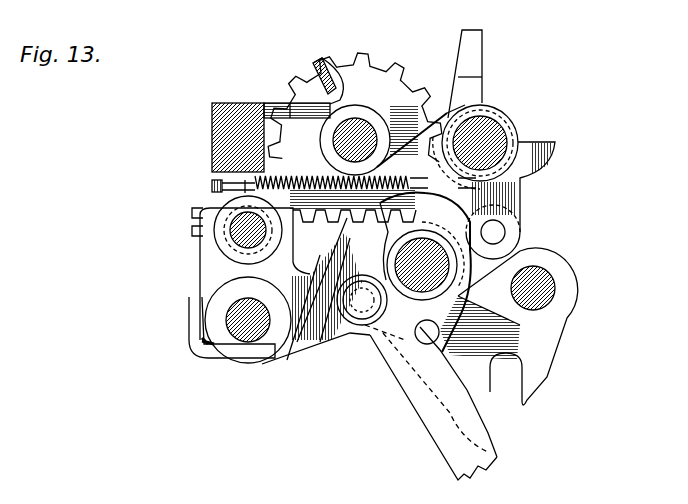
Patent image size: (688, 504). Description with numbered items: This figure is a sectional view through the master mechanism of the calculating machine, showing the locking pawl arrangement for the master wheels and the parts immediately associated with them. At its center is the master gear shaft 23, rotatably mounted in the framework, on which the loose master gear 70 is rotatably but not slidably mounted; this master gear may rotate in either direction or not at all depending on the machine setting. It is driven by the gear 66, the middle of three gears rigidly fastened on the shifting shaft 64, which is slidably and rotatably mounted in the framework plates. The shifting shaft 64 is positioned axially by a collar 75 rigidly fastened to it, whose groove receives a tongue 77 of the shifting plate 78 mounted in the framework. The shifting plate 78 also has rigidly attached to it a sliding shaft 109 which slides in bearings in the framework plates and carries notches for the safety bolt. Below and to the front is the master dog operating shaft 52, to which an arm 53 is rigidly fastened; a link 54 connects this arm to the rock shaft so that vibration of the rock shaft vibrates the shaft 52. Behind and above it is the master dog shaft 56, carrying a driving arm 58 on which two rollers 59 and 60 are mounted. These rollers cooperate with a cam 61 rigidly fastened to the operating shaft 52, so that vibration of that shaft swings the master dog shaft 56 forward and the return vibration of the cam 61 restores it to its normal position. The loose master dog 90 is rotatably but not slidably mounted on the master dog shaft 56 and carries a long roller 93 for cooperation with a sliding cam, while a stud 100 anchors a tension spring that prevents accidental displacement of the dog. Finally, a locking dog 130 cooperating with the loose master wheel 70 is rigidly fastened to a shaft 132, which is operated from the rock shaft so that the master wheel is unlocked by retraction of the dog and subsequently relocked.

The master gear shaft 23 is at (357, 137).
The master dog operating shaft 52 is at (427, 268).
The arm 53 is at (338, 332).
The link 54 is at (445, 438).
The master dog shaft 56 is at (497, 133).
The driving arm 58 is at (433, 137).
The roller 59 is at (408, 135).
The roller 60 is at (503, 213).
The cam 61 is at (500, 232).
The shifting shaft 64 is at (237, 228).
The gear 66 is at (212, 192).
The loose master gear 70 is at (349, 68).
The collar 75 is at (227, 213).
The tongue 77 is at (215, 265).
The shifting plate 78 is at (198, 325).
The loose master dog 90 is at (468, 70).
The long roller 93 is at (353, 206).
The stud 100 is at (302, 173).
The sliding shaft 109 is at (248, 330).
The locking dog 130 is at (317, 278).
The shaft 132 is at (540, 288).